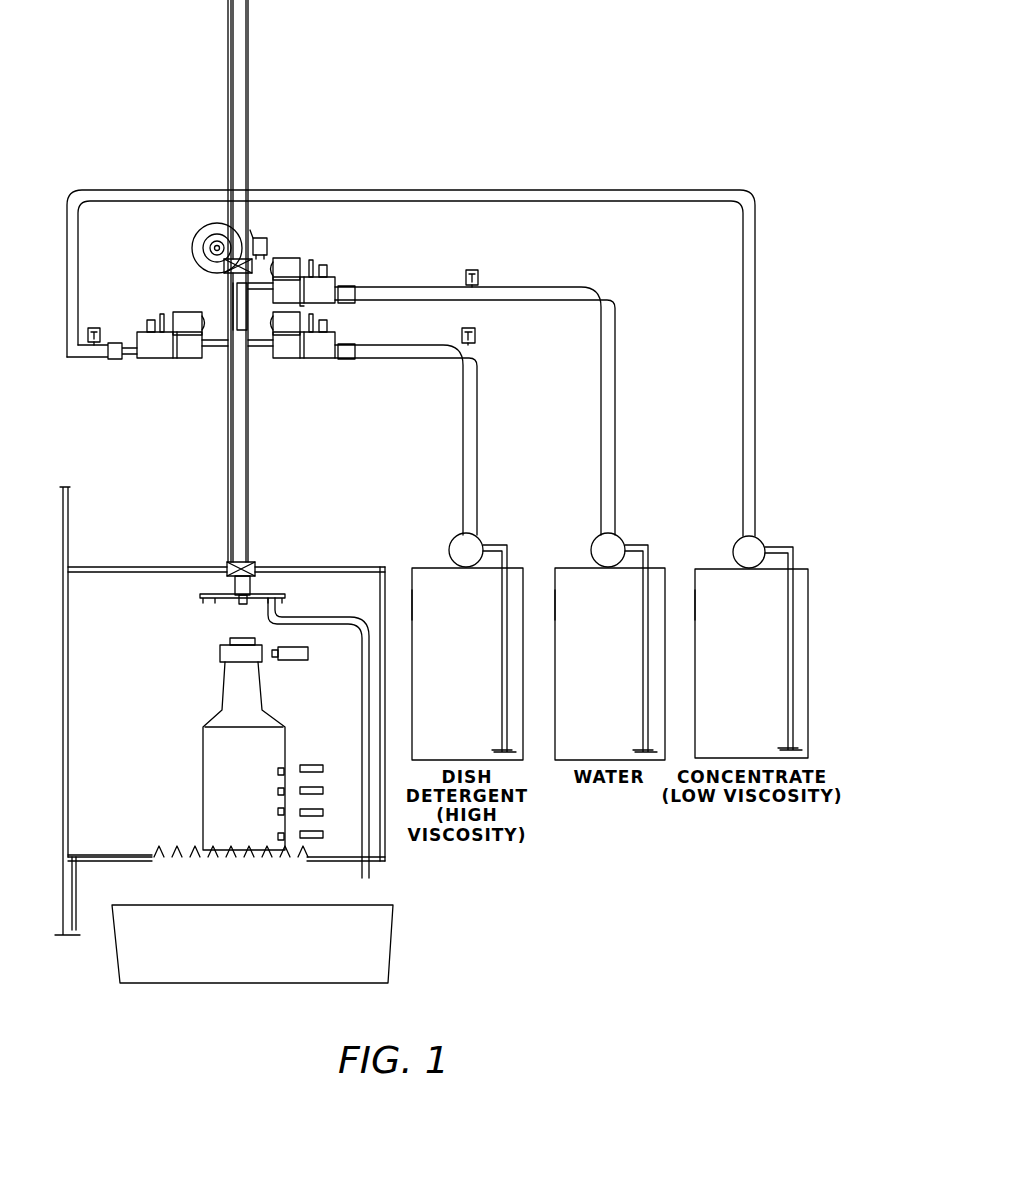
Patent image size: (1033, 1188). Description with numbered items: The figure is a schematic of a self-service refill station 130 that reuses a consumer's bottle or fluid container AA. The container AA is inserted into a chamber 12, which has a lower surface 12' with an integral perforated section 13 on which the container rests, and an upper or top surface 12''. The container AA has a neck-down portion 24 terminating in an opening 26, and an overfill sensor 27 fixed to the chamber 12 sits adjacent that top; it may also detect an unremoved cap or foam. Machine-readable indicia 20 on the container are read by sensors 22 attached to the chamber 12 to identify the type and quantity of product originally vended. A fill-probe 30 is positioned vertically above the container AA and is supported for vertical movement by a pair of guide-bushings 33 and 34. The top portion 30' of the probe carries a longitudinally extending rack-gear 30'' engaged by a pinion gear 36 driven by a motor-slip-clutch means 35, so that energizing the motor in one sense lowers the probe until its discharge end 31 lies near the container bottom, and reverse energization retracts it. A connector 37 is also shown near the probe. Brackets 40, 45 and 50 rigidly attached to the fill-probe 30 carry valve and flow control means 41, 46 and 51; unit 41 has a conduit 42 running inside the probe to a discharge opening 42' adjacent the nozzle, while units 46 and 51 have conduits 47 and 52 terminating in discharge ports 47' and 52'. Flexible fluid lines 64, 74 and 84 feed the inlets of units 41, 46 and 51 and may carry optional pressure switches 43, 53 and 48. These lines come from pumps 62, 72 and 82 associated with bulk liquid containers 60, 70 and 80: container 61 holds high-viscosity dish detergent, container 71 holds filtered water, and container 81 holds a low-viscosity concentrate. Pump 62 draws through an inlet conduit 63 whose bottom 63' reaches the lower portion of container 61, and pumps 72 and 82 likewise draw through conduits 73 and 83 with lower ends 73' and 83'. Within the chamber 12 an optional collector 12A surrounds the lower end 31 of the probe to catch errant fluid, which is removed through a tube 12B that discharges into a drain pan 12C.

The self-service refill station 130 is at (645, 133).
The fill-probe 30 is at (195, 281).
The top portion of fill-probe 30' is at (281, 281).
The rack-gear 30'' is at (183, 281).
The motor-slip-clutch means 35 is at (196, 238).
The pinion gear 36 is at (210, 248).
The guide-bushing 34 is at (224, 268).
The connector 37 is at (262, 238).
The conduit 52 is at (294, 253).
The discharge port 52' is at (205, 306).
The valve and flow control means 51 is at (330, 282).
The bracket 50 is at (330, 306).
The pressure switch 53 is at (478, 276).
The pressure switch 48 is at (98, 328).
The pressure switch 43 is at (476, 334).
The valve and flow control means 46 is at (145, 358).
The bracket 45 is at (170, 358).
The conduit 47 is at (211, 370).
The discharge port 47' is at (225, 365).
The conduit 42 is at (273, 372).
The bracket 40 is at (305, 358).
The valve and flow control means 41 is at (332, 358).
The flexible fluid line 84 is at (756, 400).
The flexible fluid line 74 is at (617, 420).
The flexible fluid line 64 is at (478, 440).
The chamber 12 is at (210, 711).
The upper or top surface 12'' is at (226, 543).
The lower surface 12' is at (110, 829).
The collector 12A is at (210, 600).
The tube 12B is at (356, 624).
The drain pan 12C is at (274, 957).
The perforated section 13 is at (184, 853).
The guide-bushing 33 is at (255, 588).
The discharge opening 42' is at (189, 590).
The discharge end 31 is at (243, 604).
The opening 26 is at (220, 650).
The overfill sensor 27 is at (295, 660).
The neck-down portion 24 is at (222, 715).
The container AA is at (222, 740).
The machine-readable indicia 20 is at (278, 836).
The sensors 22 is at (323, 834).
The bulk liquid container 60 is at (430, 565).
The container 61 is at (413, 605).
The pump 62 is at (478, 546).
The inlet conduit 63 is at (488, 648).
The bottom of conduit 63' is at (474, 734).
The bulk liquid container 70 is at (585, 565).
The container 71 is at (556, 605).
The pump 72 is at (620, 546).
The conduit 73 is at (624, 648).
The lower end 73' is at (614, 734).
The bulk liquid container 80 is at (722, 566).
The container 81 is at (696, 605).
The pump 82 is at (765, 548).
The conduit 83 is at (768, 648).
The lower end 83' is at (758, 733).